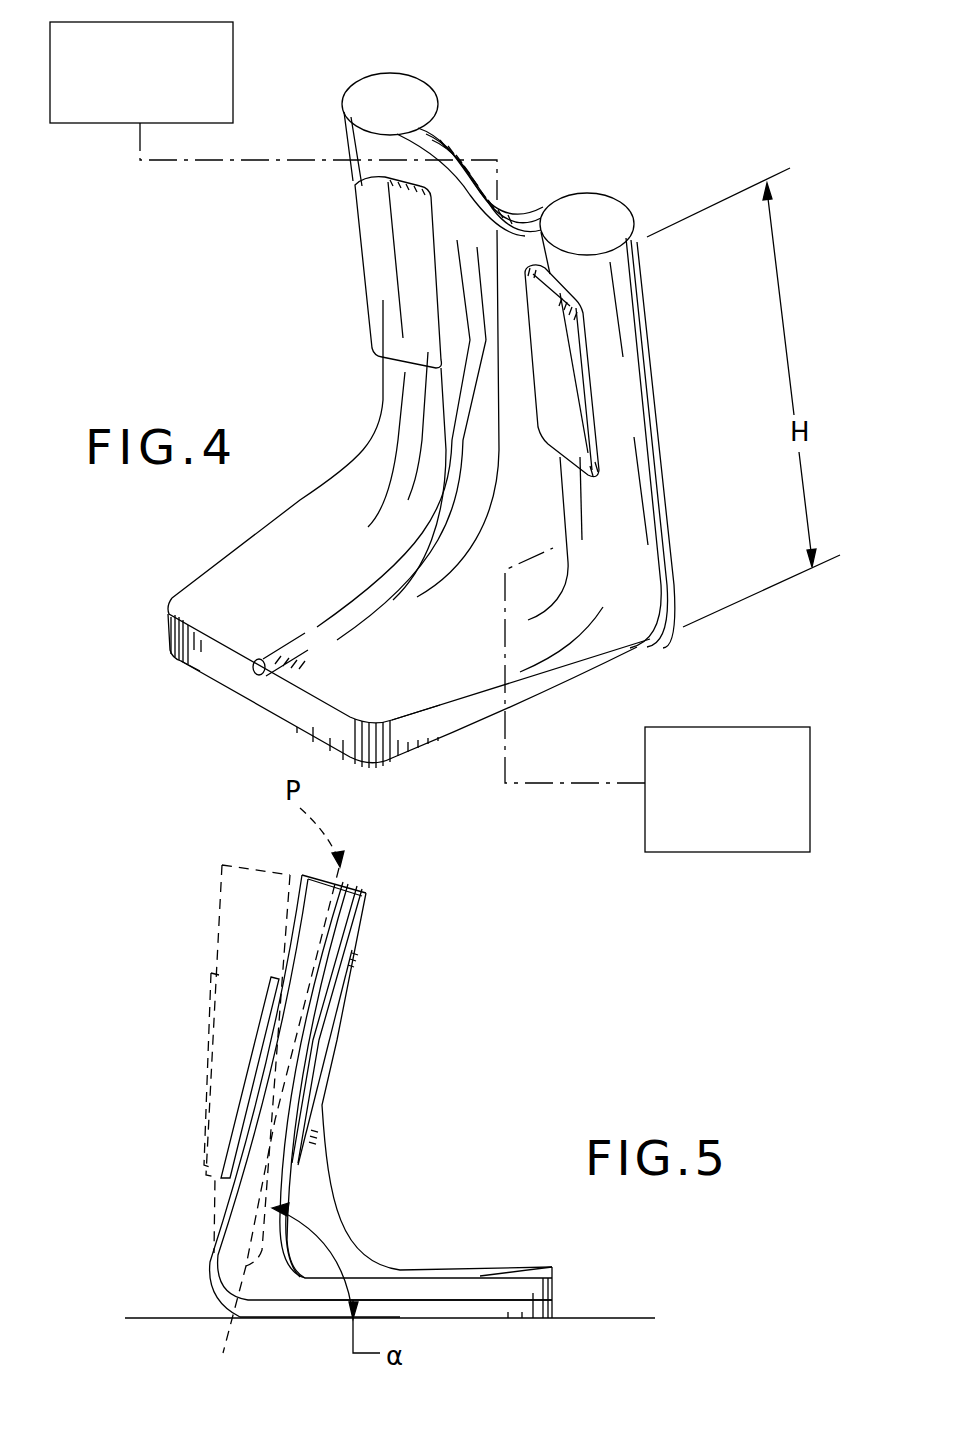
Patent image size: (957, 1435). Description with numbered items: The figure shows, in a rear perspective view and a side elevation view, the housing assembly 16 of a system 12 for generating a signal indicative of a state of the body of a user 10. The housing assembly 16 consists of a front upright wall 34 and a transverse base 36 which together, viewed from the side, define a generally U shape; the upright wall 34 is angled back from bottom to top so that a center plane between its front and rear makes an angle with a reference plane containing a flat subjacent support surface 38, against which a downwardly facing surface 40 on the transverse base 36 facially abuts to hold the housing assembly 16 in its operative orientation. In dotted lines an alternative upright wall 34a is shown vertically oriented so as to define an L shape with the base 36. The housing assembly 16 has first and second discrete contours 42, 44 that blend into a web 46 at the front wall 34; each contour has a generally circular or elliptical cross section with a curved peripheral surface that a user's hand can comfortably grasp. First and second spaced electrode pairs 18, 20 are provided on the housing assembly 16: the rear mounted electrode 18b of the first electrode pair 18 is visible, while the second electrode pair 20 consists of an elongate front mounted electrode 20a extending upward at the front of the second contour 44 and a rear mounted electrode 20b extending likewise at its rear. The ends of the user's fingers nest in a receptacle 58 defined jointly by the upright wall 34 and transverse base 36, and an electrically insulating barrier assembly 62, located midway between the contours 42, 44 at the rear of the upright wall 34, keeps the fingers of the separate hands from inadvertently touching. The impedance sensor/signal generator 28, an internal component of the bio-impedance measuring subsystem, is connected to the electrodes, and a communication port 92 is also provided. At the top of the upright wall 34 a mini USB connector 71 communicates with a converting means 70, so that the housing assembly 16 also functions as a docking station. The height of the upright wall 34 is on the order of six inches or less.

In FIG. 4, the user 10 is at (644, 184).
In FIG. 4, the system 12 is at (620, 290).
In FIG. 4, the housing assembly 16 is at (561, 188).
In FIG. 4, the first electrode pair 18 is at (612, 366).
In FIG. 4, the rear mounted electrode 18b is at (572, 383).
In FIG. 4, the second electrode pair 20 is at (355, 312).
In FIG. 5, the front mounted electrode 20a is at (268, 1077).
In FIG. 4, the rear mounted electrode 20b is at (410, 336).
In FIG. 5, the rear mounted electrode 20b is at (333, 1070).
In FIG. 4, the impedance sensor/signal generator 28 is at (730, 852).
In FIG. 4, the upright wall 34 is at (640, 468).
In FIG. 5, the upright wall 34 is at (298, 945).
In FIG. 5, the upright wall 34a is at (222, 958).
In FIG. 4, the transverse base 36 is at (438, 690).
In FIG. 5, the transverse base 36 is at (500, 1276).
In FIG. 4, the support surface 38 is at (614, 725).
In FIG. 5, the support surface 38 is at (598, 1318).
In FIG. 4, the downwardly facing surface 40 is at (268, 712).
In FIG. 5, the downwardly facing surface 40 is at (447, 1320).
In FIG. 4, the first contour 42 is at (650, 252).
In FIG. 4, the second contour 44 is at (370, 72).
In FIG. 5, the second contour 44 is at (346, 912).
In FIG. 4, the web 46 is at (425, 372).
In FIG. 4, the receptacle 58 is at (522, 488).
In FIG. 4, the barrier assembly 62 is at (440, 462).
In FIG. 5, the barrier assembly 62 is at (362, 1249).
In FIG. 4, the converting means 70 is at (128, 110).
In FIG. 4, the mini USB connector 71 is at (505, 212).
In FIG. 4, the communication port 92 is at (258, 674).